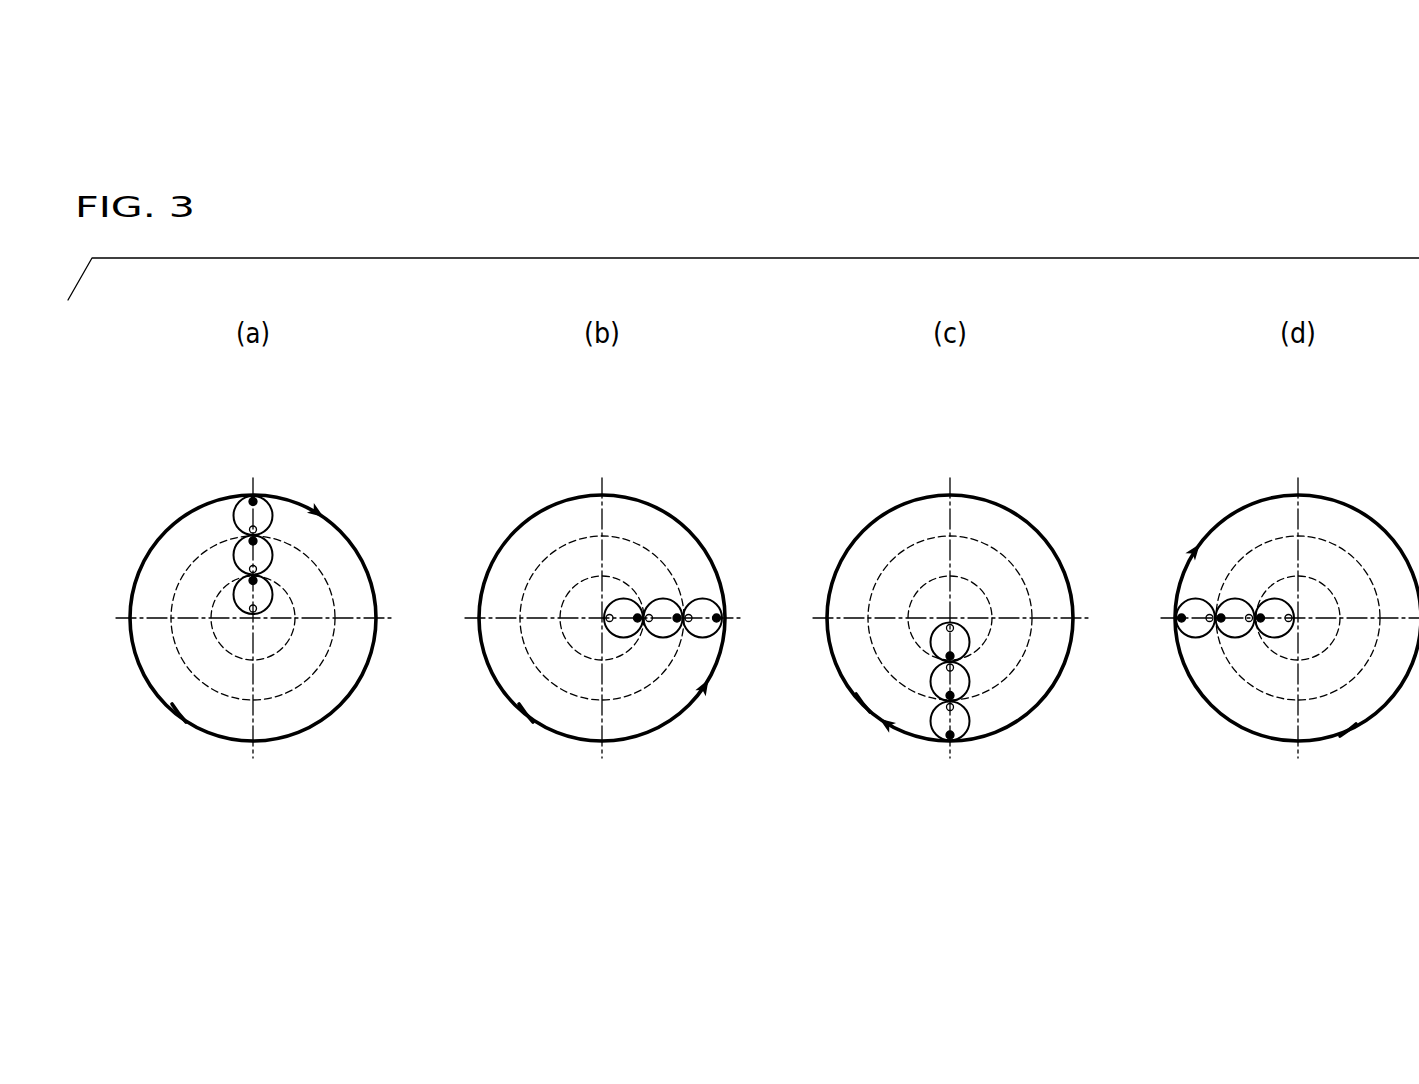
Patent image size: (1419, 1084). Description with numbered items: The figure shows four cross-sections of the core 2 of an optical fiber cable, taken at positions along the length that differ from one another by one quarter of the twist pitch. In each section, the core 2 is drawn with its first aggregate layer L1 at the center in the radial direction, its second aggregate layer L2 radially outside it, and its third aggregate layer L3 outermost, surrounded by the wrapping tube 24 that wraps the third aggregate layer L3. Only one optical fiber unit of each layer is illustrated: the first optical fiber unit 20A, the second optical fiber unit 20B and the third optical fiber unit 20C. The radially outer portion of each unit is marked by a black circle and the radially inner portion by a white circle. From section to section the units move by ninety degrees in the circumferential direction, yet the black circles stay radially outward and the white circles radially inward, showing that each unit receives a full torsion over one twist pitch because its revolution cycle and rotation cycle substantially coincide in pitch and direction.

The core 2 is at (180, 485).
The first optical fiber unit 20A is at (272, 594).
The second optical fiber unit 20B is at (272, 555).
The third optical fiber unit 20C is at (272, 515).
The wrapping tube 24 is at (178, 717).
The first aggregate layer L1 is at (225, 591).
The second aggregate layer L2 is at (201, 592).
The third aggregate layer L3 is at (160, 597).